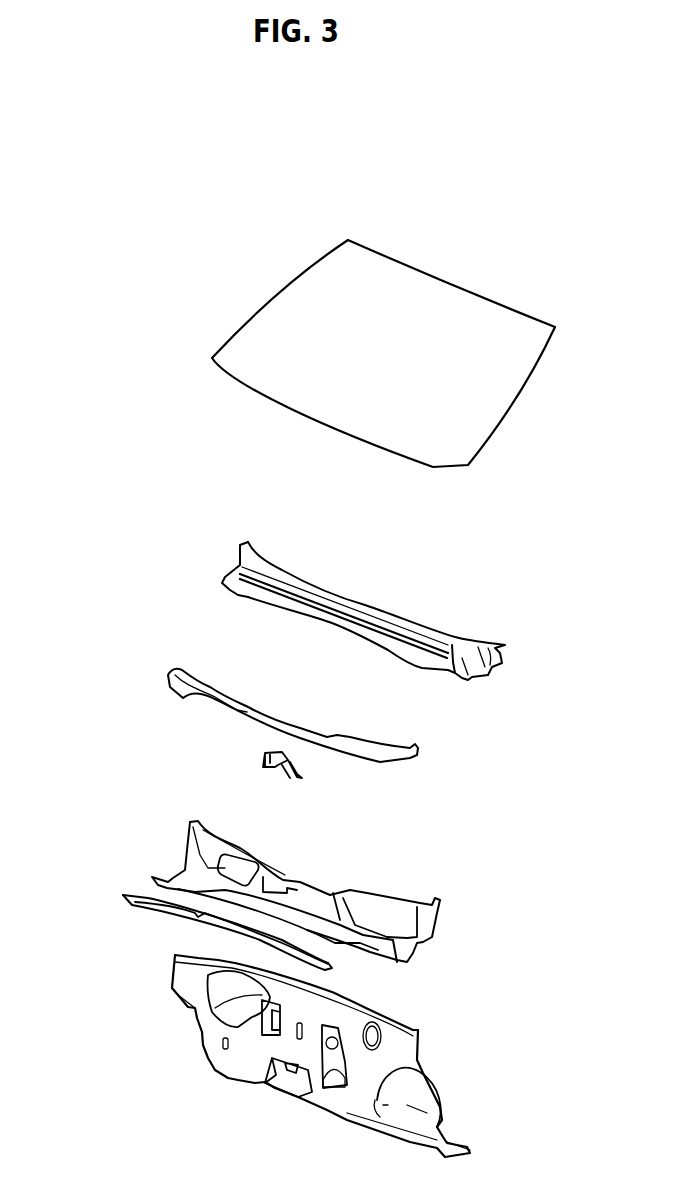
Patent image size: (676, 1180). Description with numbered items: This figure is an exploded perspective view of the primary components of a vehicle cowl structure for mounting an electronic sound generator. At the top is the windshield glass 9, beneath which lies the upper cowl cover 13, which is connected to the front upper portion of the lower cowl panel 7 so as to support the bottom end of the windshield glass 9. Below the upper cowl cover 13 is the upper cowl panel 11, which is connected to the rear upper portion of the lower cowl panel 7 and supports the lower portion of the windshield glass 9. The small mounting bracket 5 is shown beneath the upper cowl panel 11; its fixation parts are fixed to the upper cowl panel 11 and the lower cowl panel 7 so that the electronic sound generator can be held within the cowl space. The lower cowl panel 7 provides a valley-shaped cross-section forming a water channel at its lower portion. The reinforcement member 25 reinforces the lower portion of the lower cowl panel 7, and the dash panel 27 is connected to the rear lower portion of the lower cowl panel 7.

The windshield glass 9 is at (370, 263).
The upper cowl cover 13 is at (280, 573).
The upper cowl panel 11 is at (172, 672).
The mounting bracket 5 is at (263, 756).
The lower cowl panel 7 is at (422, 928).
The reinforcement member 25 is at (122, 896).
The dash panel 27 is at (407, 1053).